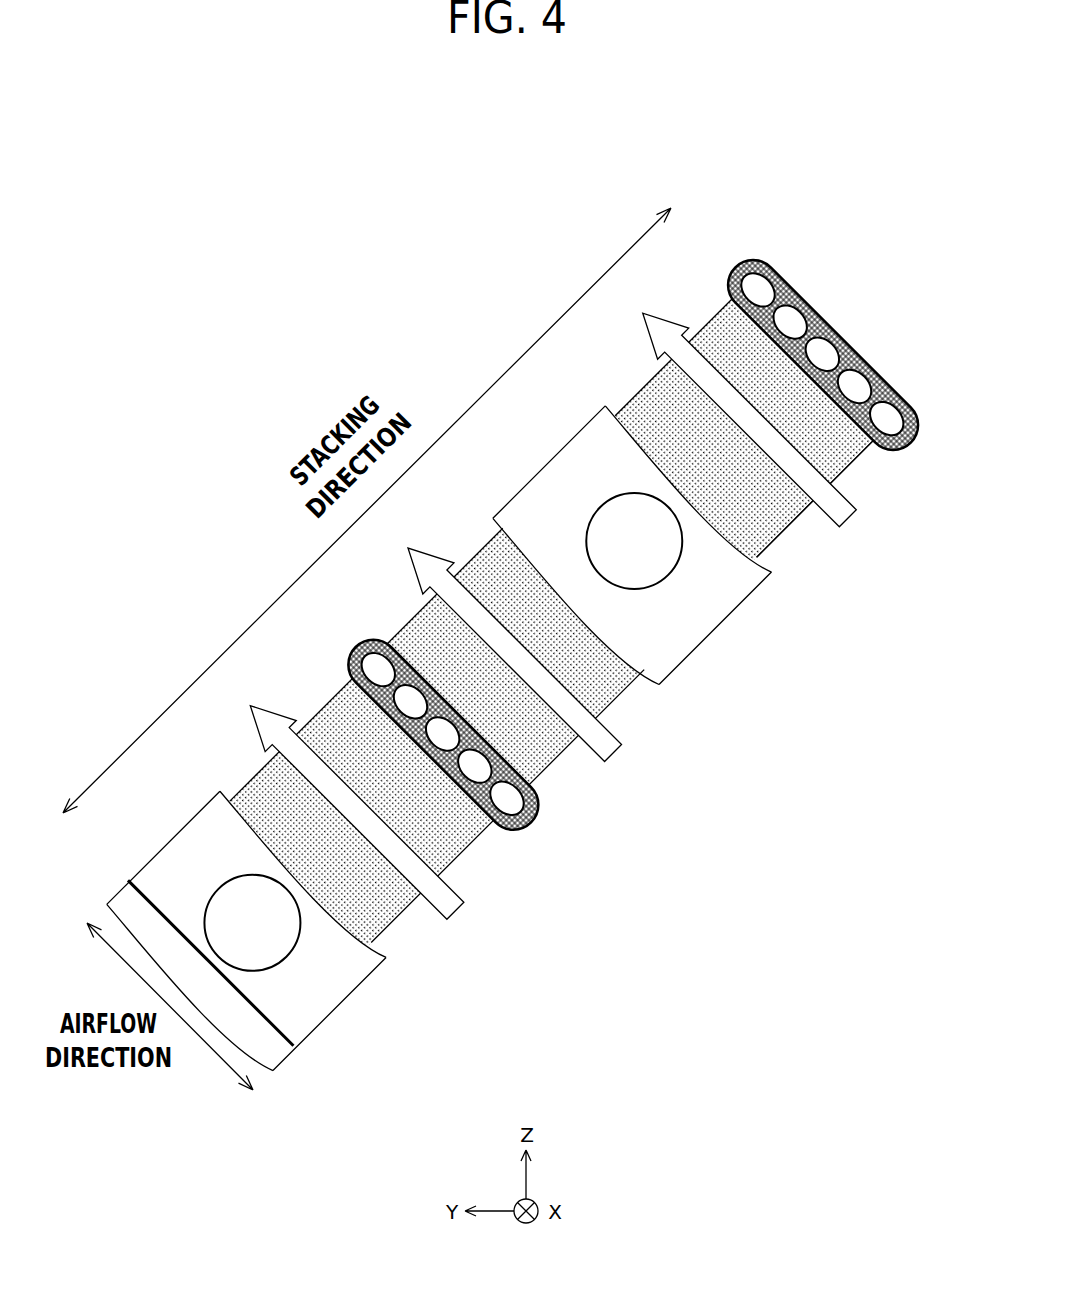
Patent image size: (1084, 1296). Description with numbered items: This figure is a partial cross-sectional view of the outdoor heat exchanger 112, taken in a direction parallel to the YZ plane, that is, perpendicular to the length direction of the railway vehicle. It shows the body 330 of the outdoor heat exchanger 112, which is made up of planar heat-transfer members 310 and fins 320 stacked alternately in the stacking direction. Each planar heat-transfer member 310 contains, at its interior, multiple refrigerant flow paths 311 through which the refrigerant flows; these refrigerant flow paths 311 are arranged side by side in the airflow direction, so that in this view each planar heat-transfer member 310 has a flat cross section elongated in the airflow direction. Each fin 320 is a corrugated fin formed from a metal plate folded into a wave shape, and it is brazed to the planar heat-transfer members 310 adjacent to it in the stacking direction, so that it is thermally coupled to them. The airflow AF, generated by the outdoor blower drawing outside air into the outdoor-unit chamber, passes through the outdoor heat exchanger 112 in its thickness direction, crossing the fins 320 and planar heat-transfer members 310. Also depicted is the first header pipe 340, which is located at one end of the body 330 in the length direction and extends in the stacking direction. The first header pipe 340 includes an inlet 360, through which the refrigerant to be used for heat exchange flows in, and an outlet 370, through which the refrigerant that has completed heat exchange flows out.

The outdoor heat exchanger 112 is at (783, 195).
The planar heat-transfer member 310 is at (909, 441).
The refrigerant flow path 311 is at (650, 530).
The fin 320 is at (698, 467).
The body 330 is at (797, 535).
The first header pipe 340 is at (714, 624).
The inlet 360 is at (618, 551).
The outlet 370 is at (231, 935).
The airflow AF is at (564, 625).